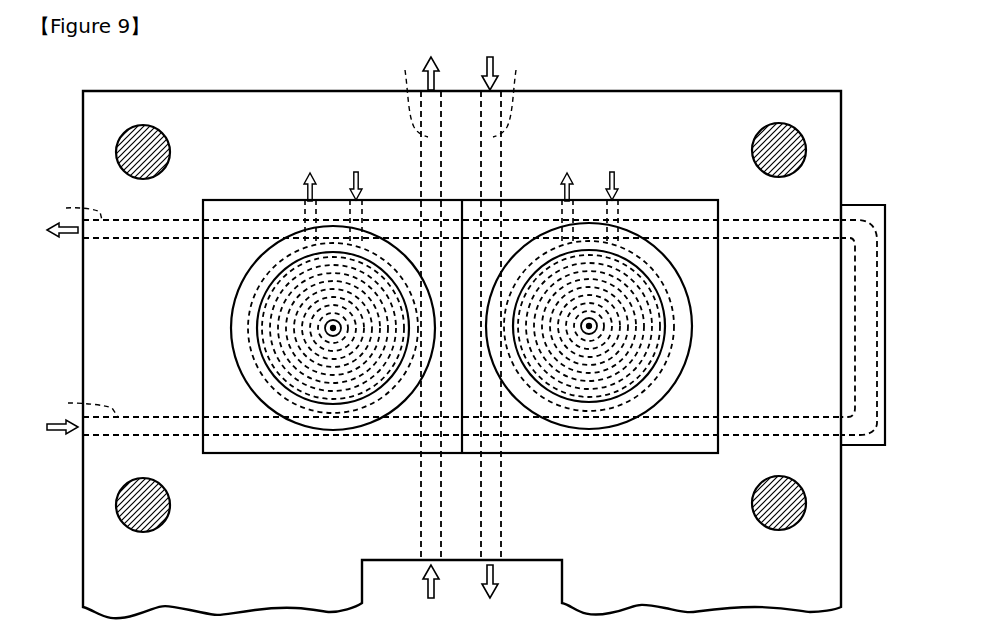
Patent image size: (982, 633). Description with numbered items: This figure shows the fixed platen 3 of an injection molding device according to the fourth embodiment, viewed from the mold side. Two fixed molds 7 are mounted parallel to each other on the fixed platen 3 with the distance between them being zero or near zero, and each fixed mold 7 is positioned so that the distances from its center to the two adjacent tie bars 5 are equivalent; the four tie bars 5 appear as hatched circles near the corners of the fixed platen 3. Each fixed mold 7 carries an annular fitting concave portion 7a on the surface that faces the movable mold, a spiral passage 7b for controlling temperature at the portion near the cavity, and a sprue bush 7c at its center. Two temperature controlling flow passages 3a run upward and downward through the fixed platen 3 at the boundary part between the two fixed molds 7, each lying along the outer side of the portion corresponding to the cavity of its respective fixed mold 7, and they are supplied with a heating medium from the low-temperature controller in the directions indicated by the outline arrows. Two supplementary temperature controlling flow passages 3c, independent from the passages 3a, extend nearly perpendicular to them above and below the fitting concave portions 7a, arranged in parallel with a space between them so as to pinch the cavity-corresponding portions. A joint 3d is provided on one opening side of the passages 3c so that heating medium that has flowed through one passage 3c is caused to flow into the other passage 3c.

The fixed platen 3 is at (285, 103).
The temperature controlling flow passage 3a is at (459, 322).
The supplementary temperature controlling flow passage 3c is at (438, 313).
The joint 3d is at (867, 213).
The tie bar 5 is at (125, 155).
The fixed mold 7 is at (242, 210).
The annular fitting concave portion 7a is at (231, 328).
The spiral passage 7b is at (248, 279).
The sprue bush 7c is at (331, 337).